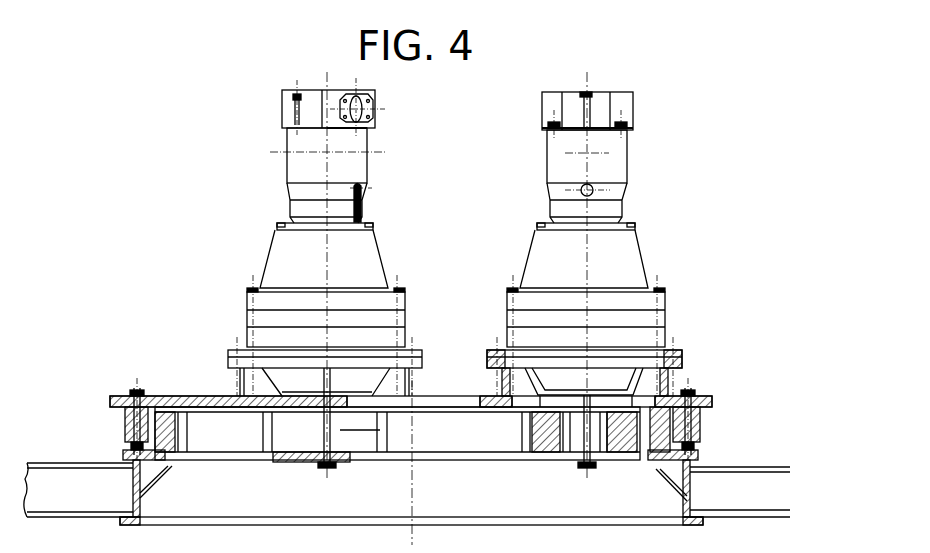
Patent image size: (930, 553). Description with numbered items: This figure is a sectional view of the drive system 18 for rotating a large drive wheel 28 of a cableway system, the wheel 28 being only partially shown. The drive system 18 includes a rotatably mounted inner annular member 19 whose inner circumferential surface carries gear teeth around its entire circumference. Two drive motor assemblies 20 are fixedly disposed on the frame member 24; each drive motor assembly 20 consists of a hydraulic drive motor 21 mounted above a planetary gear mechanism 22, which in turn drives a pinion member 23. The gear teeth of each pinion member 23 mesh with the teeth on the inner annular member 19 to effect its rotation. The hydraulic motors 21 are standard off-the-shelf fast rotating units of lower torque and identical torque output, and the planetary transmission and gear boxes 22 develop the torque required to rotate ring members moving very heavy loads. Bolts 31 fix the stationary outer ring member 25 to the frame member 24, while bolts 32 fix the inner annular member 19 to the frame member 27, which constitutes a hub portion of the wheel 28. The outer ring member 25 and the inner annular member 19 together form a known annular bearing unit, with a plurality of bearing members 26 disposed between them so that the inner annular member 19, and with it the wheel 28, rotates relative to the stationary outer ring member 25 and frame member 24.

The drive system 18 is at (246, 127).
The inner annular member 19 is at (236, 437).
The drive motor assembly 20 is at (385, 239).
The hydraulic drive motor 21 is at (360, 163).
The planetary gear mechanism 22 is at (290, 280).
The pinion member 23 is at (362, 440).
The frame member 24 is at (488, 396).
The outer ring member 25 is at (125, 418).
The bearing member 26 is at (700, 422).
The frame member 27 is at (700, 452).
The wheel 28 is at (757, 480).
The bolt 31 is at (692, 388).
The bolt 32 is at (162, 465).